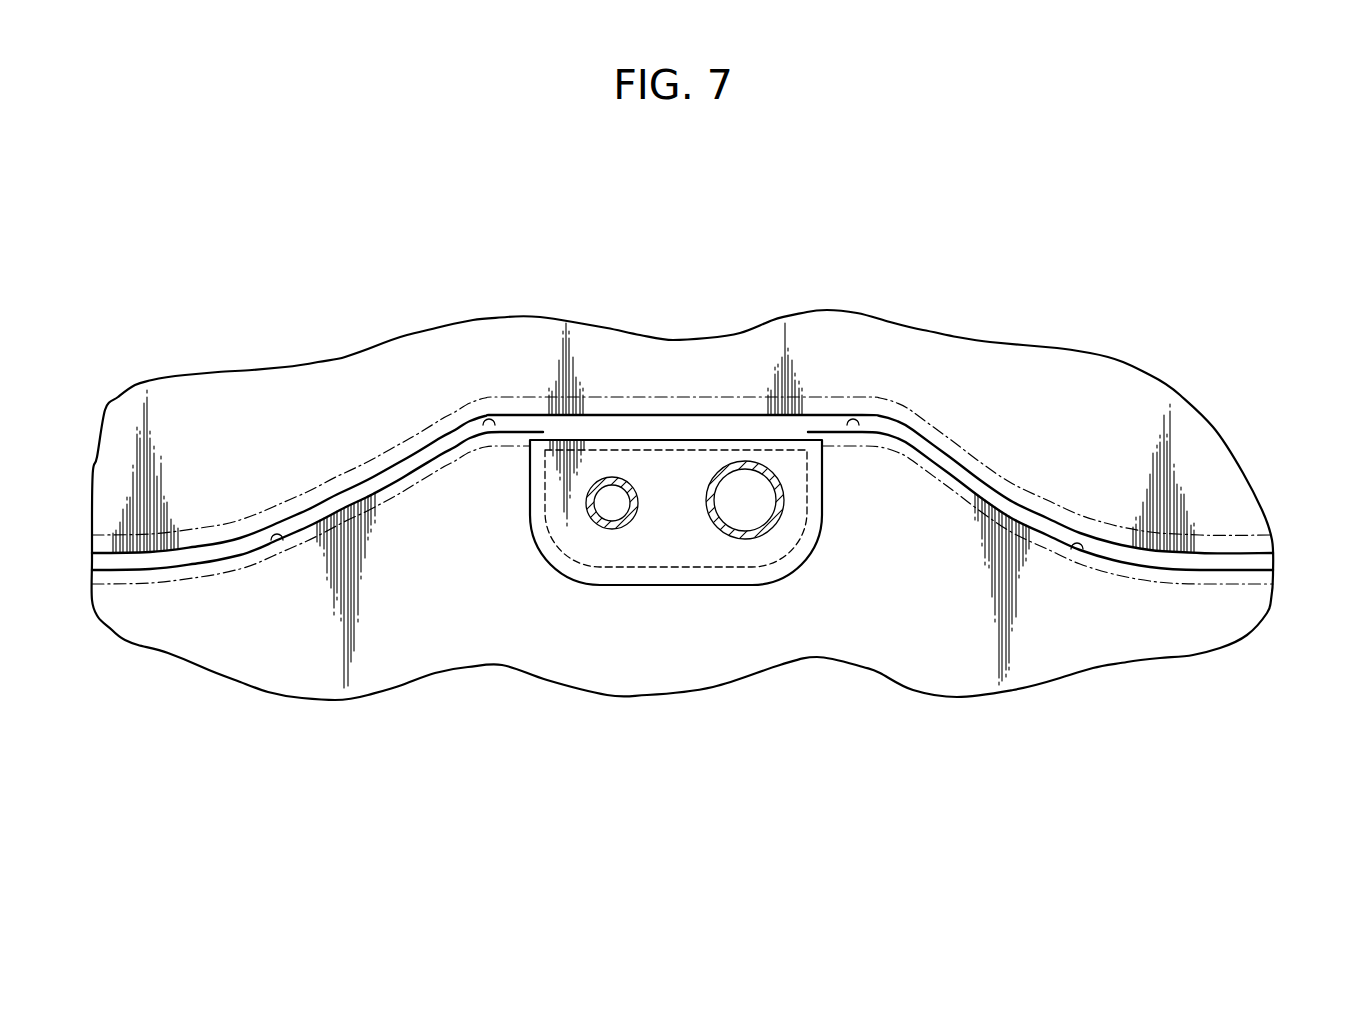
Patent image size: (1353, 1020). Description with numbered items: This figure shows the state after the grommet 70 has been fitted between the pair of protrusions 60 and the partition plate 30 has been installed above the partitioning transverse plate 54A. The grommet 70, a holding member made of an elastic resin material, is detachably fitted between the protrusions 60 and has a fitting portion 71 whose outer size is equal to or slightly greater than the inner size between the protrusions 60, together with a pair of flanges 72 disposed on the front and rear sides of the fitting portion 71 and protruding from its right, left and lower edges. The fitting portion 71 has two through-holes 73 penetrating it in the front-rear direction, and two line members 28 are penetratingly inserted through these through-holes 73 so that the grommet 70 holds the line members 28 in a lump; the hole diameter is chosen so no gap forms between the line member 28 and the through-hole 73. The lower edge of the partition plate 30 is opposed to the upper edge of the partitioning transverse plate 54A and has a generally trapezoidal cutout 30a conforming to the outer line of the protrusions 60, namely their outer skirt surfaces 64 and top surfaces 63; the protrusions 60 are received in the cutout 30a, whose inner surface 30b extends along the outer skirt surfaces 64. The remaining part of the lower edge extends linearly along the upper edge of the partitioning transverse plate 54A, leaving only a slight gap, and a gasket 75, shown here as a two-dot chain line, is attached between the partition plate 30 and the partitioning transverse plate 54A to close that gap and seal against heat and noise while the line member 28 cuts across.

The line member 28 is at (628, 496).
The partition plate 30 is at (264, 395).
The cutout 30a is at (683, 419).
The inner surface 30b is at (359, 504).
The partitioning transverse plate 54A is at (263, 656).
The protrusion 60 is at (420, 568).
The top surface 63 is at (489, 426).
The outer skirt surface 64 is at (277, 541).
The grommet 70 is at (673, 550).
The fitting portion 71 is at (640, 523).
The flange 72 is at (565, 563).
The through-hole 73 is at (590, 523).
The gasket 75 is at (258, 515).